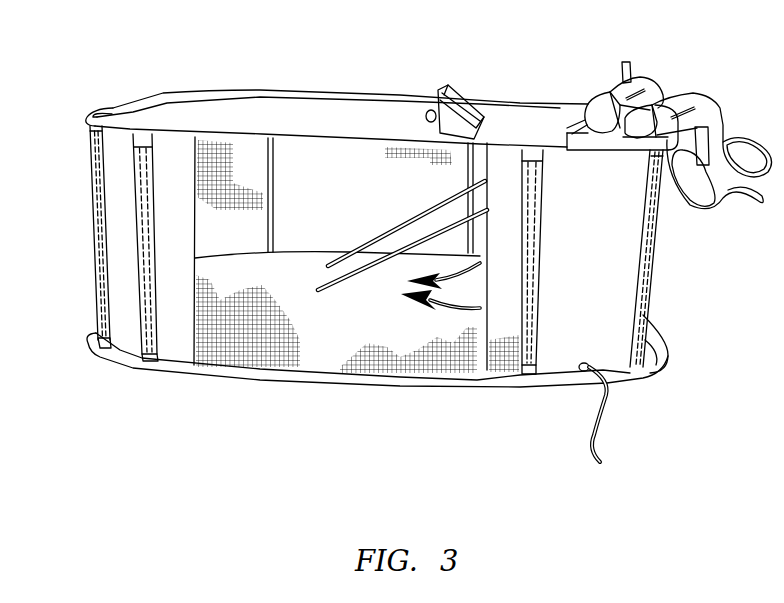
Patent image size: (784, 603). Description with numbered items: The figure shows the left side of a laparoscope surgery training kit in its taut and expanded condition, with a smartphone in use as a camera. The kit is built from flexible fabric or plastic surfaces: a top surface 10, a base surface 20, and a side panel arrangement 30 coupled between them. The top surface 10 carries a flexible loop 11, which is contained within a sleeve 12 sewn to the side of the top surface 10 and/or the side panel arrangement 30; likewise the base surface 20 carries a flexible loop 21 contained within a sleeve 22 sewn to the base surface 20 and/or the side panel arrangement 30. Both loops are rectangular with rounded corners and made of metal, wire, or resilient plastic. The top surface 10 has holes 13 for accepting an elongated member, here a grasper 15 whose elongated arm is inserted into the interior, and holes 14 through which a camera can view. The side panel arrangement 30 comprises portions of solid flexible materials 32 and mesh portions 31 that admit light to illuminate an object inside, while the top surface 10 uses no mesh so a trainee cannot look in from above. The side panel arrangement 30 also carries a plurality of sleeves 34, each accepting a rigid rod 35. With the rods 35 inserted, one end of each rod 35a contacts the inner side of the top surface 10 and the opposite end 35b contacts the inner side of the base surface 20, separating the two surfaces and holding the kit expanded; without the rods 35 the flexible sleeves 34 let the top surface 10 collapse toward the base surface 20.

The top surface 10 is at (310, 112).
The flexible loop 11 is at (398, 100).
The sleeve 12 is at (360, 95).
The holes 13 is at (630, 148).
The holes 14 is at (430, 116).
The grasper 15 is at (645, 78).
The base surface 20 is at (247, 373).
The flexible loop 21 is at (660, 347).
The sleeve 22 is at (660, 367).
The side panel arrangement 30 is at (662, 289).
The mesh portions 31 is at (313, 347).
The solid flexible materials 32 is at (115, 363).
The sleeves 34 is at (103, 250).
The rods 35 is at (97, 228).
The one end of rod 35a is at (143, 137).
The opposite end of rod 35b is at (150, 367).